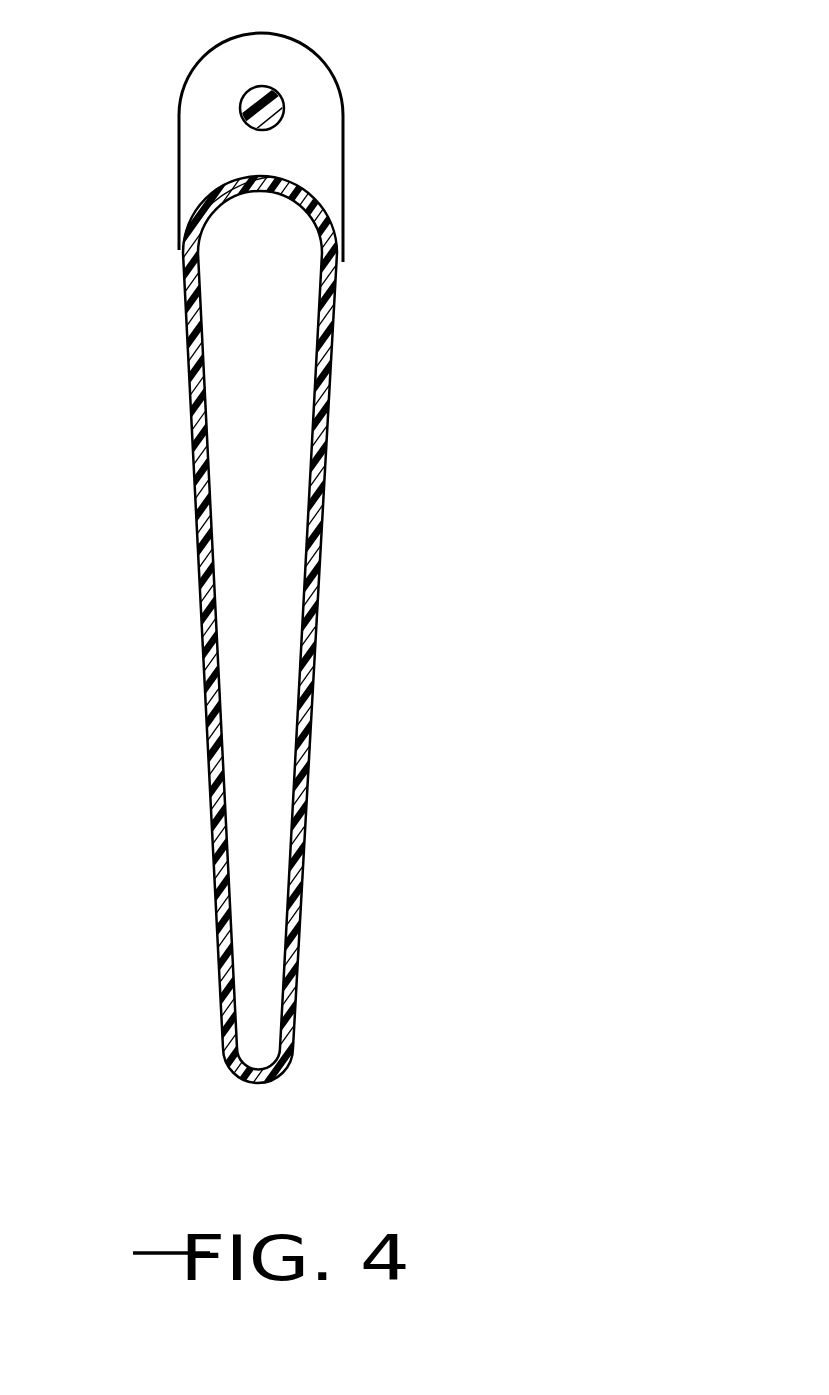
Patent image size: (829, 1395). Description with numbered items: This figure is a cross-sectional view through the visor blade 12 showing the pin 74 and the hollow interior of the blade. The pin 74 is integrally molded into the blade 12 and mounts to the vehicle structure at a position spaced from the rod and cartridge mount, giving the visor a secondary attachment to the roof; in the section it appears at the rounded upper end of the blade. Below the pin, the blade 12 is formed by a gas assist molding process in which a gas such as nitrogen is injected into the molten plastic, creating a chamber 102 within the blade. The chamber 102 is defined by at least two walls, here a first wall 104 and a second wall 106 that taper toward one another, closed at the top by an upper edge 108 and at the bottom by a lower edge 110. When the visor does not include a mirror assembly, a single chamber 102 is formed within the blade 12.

The blade 12 is at (325, 460).
The pin 74 is at (283, 97).
The chamber 102 is at (243, 690).
The first wall 104 is at (200, 557).
The second wall 106 is at (313, 590).
The upper edge 108 is at (270, 177).
The lower edge 110 is at (253, 1080).